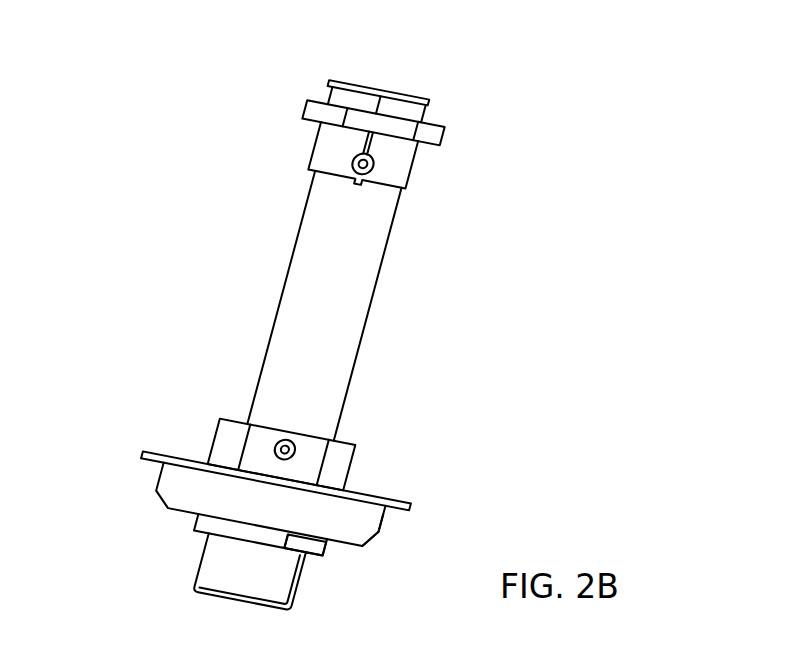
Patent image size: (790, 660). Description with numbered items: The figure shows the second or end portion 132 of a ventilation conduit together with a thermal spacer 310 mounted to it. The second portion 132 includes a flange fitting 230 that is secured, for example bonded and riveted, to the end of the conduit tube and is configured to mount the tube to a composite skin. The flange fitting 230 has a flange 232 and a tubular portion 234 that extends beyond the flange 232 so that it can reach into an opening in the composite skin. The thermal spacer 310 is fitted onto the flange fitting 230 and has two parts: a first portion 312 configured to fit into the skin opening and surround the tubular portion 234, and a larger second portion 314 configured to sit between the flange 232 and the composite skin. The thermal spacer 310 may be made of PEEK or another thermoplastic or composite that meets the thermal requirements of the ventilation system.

The second portion 132 is at (378, 290).
The flange fitting 230 is at (357, 457).
The flange 232 is at (143, 453).
The thermal spacer 310 is at (161, 482).
The first portion 312 is at (324, 550).
The second portion 314 is at (382, 528).
The tubular portion 234 is at (198, 567).